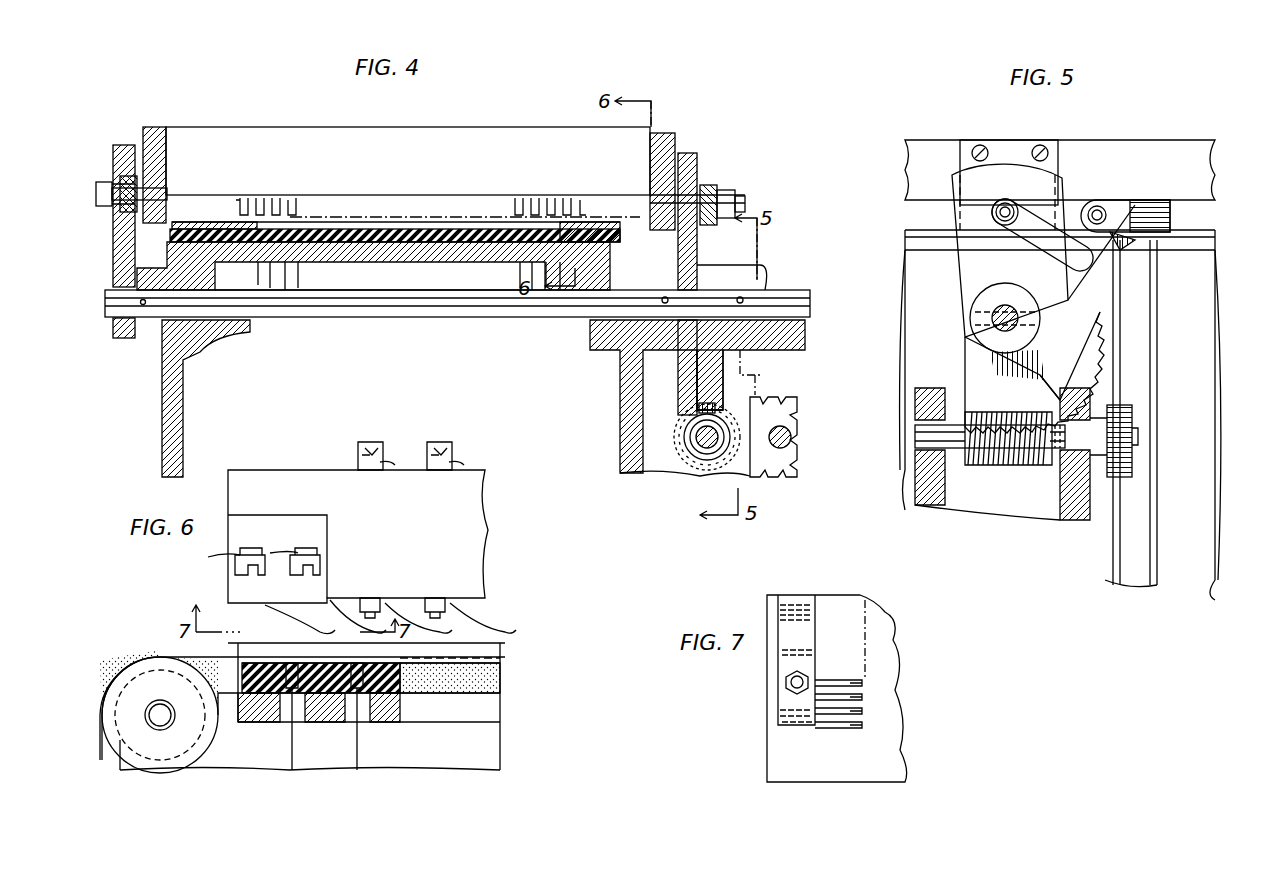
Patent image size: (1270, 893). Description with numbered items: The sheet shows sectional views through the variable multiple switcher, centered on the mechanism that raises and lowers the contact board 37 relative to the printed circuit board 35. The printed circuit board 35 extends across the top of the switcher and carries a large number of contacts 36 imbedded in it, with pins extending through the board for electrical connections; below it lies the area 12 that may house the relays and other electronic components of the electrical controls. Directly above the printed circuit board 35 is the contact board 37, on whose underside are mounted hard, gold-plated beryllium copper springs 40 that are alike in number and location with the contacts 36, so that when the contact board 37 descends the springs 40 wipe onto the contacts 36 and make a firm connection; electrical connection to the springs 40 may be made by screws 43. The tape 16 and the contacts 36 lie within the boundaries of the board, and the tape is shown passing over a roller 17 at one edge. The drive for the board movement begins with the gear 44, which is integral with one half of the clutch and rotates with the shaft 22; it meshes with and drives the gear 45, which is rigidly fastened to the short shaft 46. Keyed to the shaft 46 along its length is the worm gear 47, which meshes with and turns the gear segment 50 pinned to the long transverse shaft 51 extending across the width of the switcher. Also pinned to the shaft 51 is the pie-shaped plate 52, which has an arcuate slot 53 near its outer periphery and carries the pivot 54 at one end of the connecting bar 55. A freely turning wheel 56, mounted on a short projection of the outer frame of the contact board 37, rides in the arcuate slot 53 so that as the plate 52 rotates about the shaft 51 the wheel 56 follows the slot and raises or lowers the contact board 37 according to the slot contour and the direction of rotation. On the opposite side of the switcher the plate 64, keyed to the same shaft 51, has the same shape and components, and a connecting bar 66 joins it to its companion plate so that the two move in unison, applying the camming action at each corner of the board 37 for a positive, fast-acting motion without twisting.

In FIG. 4, the area below the base 12 is at (408, 359).
In FIG. 6, the area below the base 12 is at (422, 758).
In FIG. 4, the tape 16 is at (350, 225).
In FIG. 6, the tape 16 is at (168, 657).
In FIG. 6, the supply roller 17 is at (130, 675).
In FIG. 4, the shaft 22 is at (793, 438).
In FIG. 4, the printed circuit board 35 is at (408, 244).
In FIG. 5, the printed circuit board 35 is at (1198, 238).
In FIG. 6, the printed circuit board 35 is at (478, 690).
In FIG. 4, the contacts 36 is at (280, 272).
In FIG. 6, the contacts 36 is at (298, 685).
In FIG. 4, the contact board 37 is at (473, 117).
In FIG. 5, the contact board 37 is at (1111, 131).
In FIG. 6, the contact board 37 is at (492, 537).
In FIG. 7, the contact board 37 is at (890, 659).
In FIG. 4, the springs 40 is at (245, 200).
In FIG. 6, the springs 40 is at (345, 612).
In FIG. 7, the springs 40 is at (864, 725).
In FIG. 6, the screws 43 is at (436, 442).
In FIG. 4, the gear 44 is at (785, 420).
In FIG. 4, the gear 45 is at (732, 468).
In FIG. 5, the gear 45 is at (1130, 412).
In FIG. 4, the shaft 46 is at (700, 445).
In FIG. 5, the shaft 46 is at (915, 437).
In FIG. 4, the worm gear 47 is at (684, 440).
In FIG. 5, the worm gear 47 is at (1015, 462).
In FIG. 4, the gear segment 50 is at (700, 372).
In FIG. 5, the gear segment 50 is at (970, 370).
In FIG. 4, the transverse shaft 51 is at (812, 312).
In FIG. 5, the transverse shaft 51 is at (992, 313).
In FIG. 4, the pie-shaped plate 52 is at (698, 256).
In FIG. 5, the pie-shaped plate 52 is at (1013, 271).
In FIG. 5, the arcuate slot 53 is at (1100, 260).
In FIG. 4, the pivot 54 is at (744, 208).
In FIG. 5, the pivot 54 is at (1100, 210).
In FIG. 4, the connecting bar 55 is at (730, 198).
In FIG. 5, the connecting bar 55 is at (1140, 205).
In FIG. 4, the wheel 56 is at (712, 188).
In FIG. 5, the wheel 56 is at (1010, 205).
In FIG. 4, the pie-shaped plate 64 is at (113, 252).
In FIG. 4, the connecting bar 66 is at (102, 184).